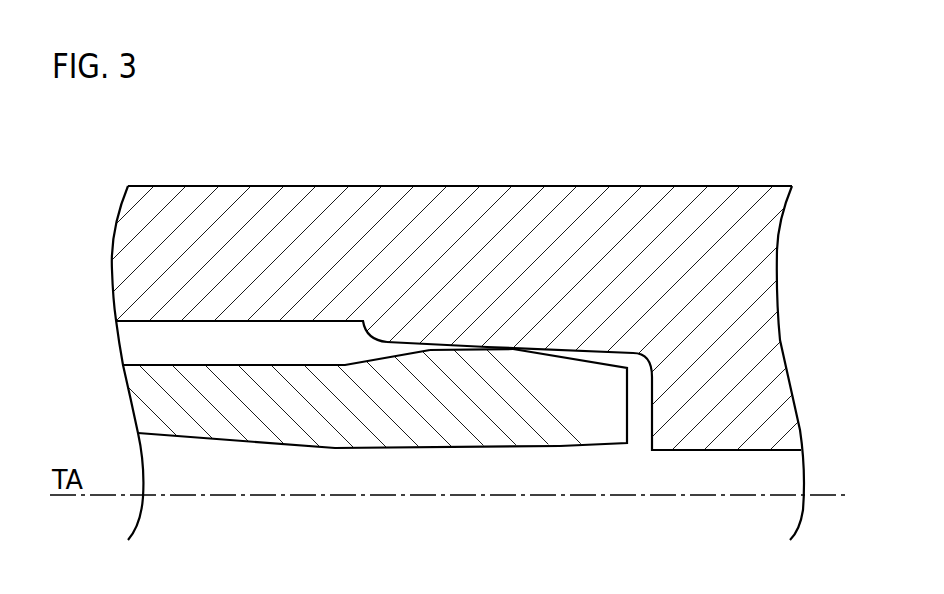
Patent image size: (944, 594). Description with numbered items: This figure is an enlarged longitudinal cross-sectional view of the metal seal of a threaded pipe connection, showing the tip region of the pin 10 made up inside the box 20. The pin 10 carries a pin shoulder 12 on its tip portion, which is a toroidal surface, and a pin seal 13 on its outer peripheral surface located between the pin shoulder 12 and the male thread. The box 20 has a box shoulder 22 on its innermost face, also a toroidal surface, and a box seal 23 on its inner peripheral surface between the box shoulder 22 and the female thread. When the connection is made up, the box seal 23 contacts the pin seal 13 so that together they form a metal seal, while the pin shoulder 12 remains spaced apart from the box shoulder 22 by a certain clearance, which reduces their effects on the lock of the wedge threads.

The pin 10 is at (188, 446).
The pin shoulder 12 is at (632, 382).
The pin seal 13 is at (486, 345).
The box 20 is at (677, 180).
The box shoulder 22 is at (652, 425).
The box seal 23 is at (490, 348).